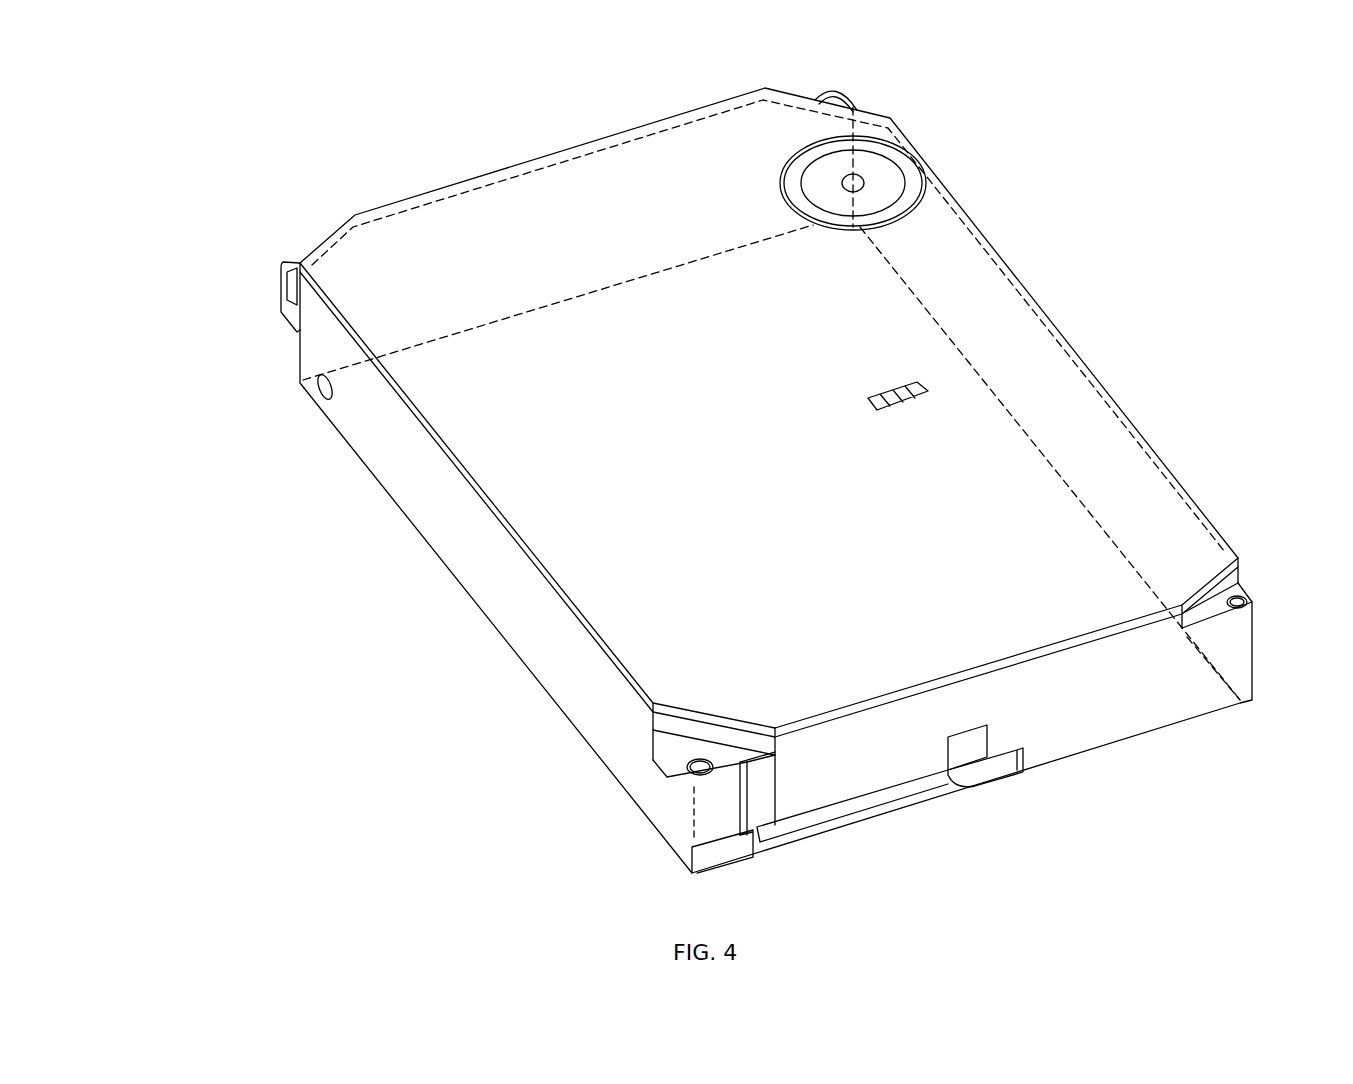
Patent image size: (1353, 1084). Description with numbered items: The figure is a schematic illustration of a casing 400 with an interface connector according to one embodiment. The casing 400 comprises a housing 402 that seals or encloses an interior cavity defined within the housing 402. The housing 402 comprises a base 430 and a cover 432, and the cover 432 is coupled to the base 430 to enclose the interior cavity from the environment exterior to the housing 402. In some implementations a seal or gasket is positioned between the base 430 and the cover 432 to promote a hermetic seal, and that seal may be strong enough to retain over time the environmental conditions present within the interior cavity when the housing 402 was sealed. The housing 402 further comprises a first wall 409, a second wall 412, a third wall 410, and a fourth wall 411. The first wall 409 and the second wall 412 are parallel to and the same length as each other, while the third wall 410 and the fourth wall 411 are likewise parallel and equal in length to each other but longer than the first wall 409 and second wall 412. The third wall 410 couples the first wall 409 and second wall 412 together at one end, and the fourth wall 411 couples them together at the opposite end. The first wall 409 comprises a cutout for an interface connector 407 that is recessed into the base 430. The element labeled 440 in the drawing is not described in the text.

The casing 400 is at (203, 135).
The housing 402 is at (1213, 728).
The interface connector 407 is at (848, 820).
The first wall 409 is at (1105, 728).
The third wall 410 is at (500, 592).
The fourth wall 411 is at (952, 273).
The second wall 412 is at (590, 197).
The base 430 is at (438, 507).
The cover 432 is at (747, 132).
The cover edge 440 is at (407, 407).